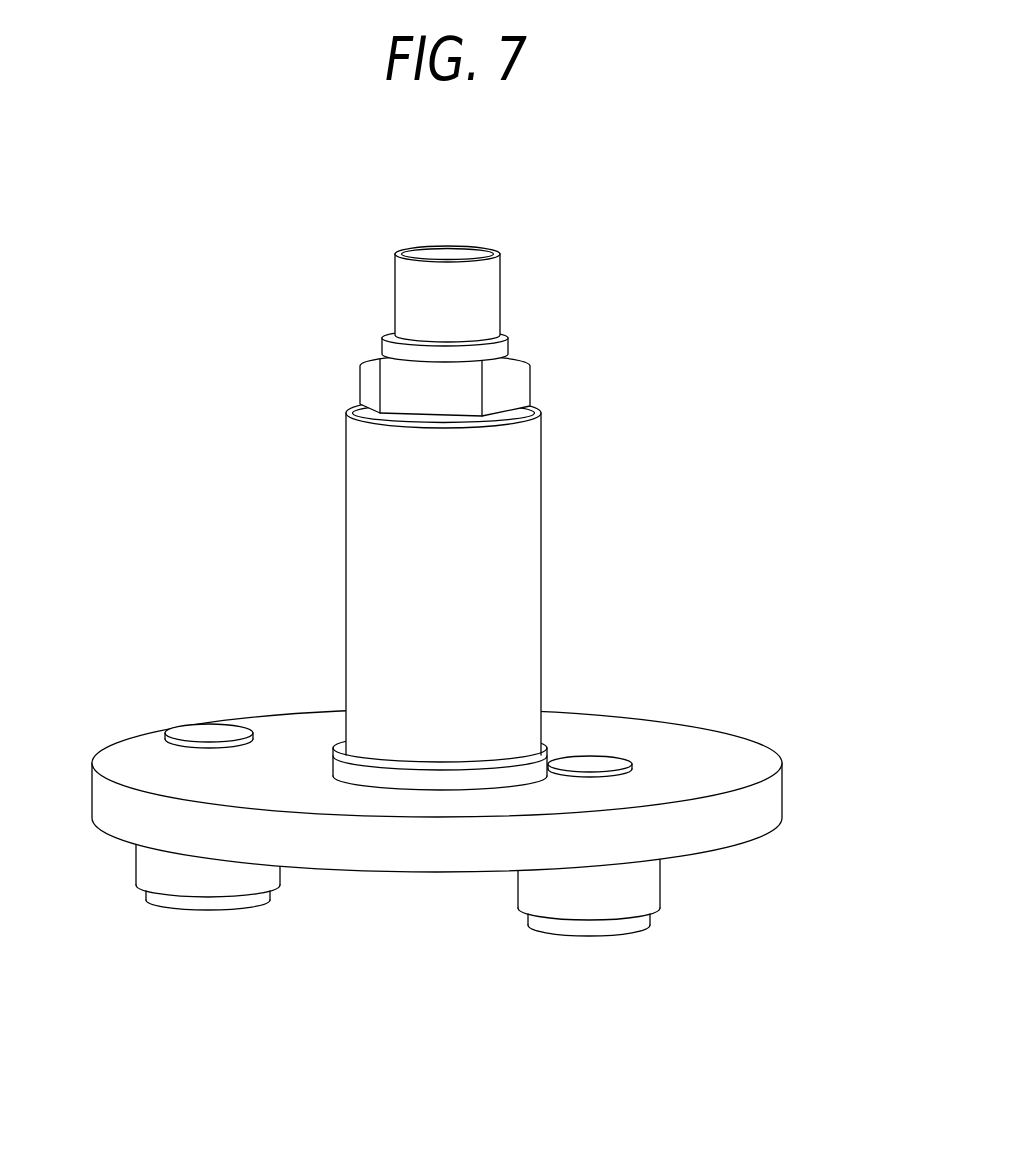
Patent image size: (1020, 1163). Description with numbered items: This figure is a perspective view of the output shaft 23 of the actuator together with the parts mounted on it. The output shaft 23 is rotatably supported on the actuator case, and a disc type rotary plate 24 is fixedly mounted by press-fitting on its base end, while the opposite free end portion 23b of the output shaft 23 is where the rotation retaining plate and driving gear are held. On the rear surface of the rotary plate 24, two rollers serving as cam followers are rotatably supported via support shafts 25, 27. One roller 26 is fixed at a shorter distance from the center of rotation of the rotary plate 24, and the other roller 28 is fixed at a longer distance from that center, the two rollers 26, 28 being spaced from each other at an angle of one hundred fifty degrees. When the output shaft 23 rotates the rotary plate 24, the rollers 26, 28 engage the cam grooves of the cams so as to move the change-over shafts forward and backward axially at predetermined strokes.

The output shaft 23 is at (500, 518).
The free end portion 23b is at (463, 400).
The rotary plate 24 is at (786, 792).
The support shaft 25 is at (592, 762).
The roller 26 is at (632, 892).
The support shaft 27 is at (213, 735).
The roller 28 is at (155, 870).